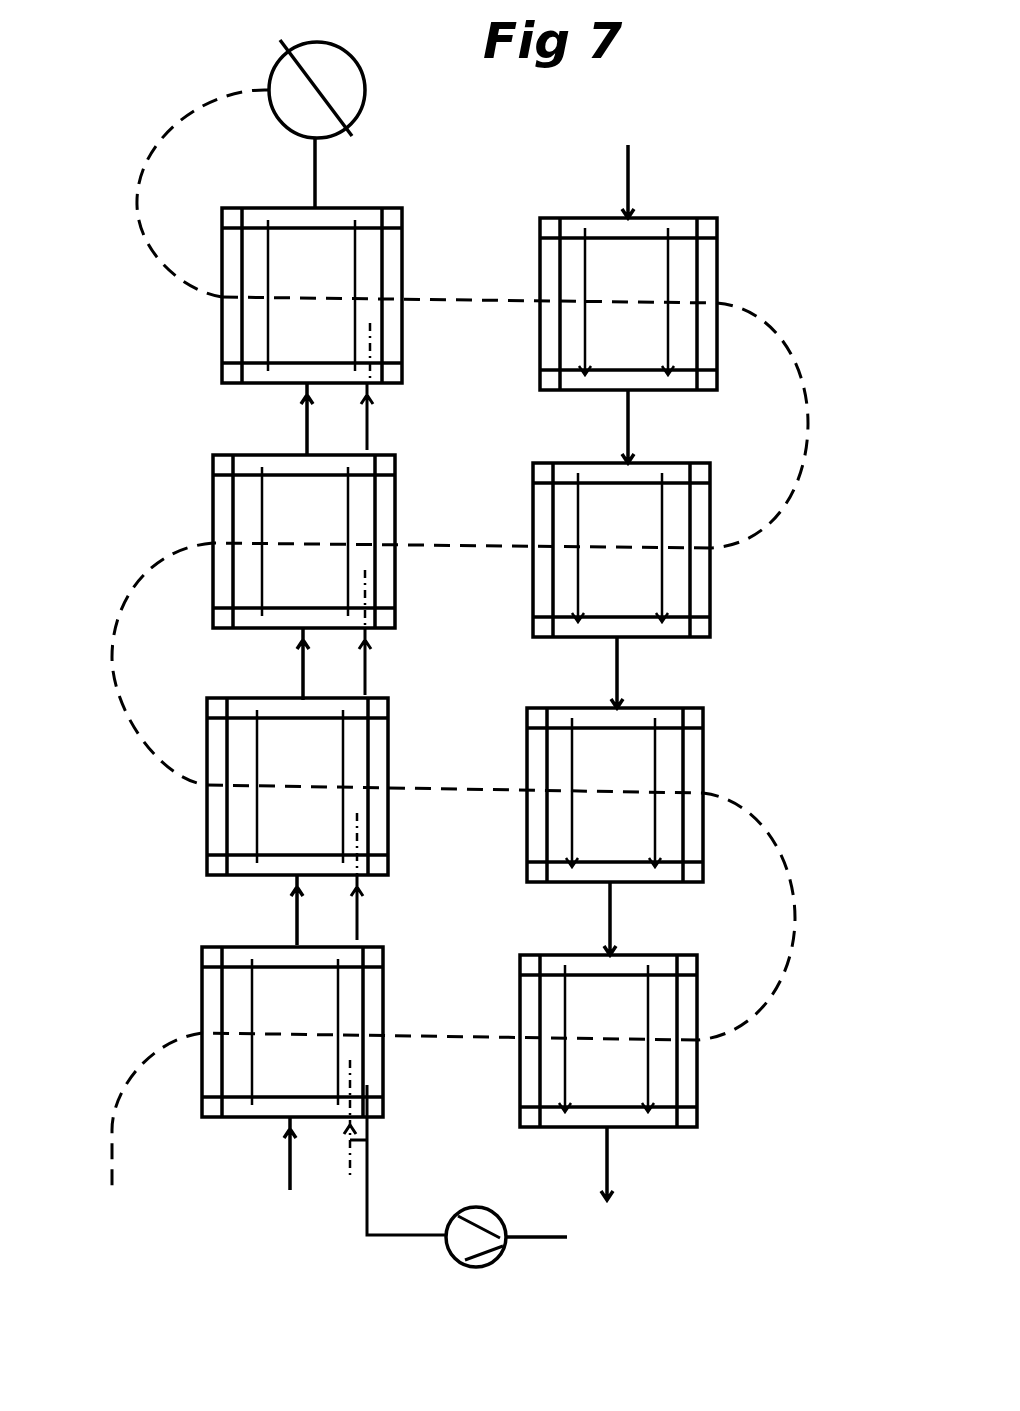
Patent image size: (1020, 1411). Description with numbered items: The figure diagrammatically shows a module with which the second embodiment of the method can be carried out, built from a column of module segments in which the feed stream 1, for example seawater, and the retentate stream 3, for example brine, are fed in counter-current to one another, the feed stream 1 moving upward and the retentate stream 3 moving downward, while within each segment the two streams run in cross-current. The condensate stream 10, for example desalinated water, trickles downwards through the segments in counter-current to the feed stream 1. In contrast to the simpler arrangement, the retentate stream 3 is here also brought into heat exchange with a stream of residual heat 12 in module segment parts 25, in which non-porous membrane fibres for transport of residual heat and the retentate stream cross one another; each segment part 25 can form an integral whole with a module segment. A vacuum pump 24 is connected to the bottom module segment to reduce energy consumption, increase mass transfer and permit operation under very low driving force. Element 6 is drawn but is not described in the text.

The feed stream 1 is at (315, 190).
The retentate stream 3 is at (138, 215).
The heater / heat exchanger 6 is at (358, 78).
The condensate stream 10 is at (375, 398).
The stream of residual heat 12 is at (648, 672).
The vacuum pump 24 is at (488, 1212).
The module segment parts 25 is at (710, 600).